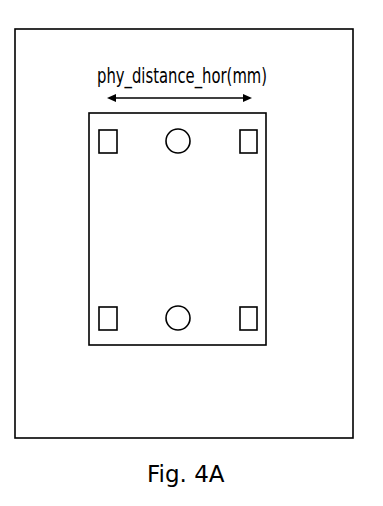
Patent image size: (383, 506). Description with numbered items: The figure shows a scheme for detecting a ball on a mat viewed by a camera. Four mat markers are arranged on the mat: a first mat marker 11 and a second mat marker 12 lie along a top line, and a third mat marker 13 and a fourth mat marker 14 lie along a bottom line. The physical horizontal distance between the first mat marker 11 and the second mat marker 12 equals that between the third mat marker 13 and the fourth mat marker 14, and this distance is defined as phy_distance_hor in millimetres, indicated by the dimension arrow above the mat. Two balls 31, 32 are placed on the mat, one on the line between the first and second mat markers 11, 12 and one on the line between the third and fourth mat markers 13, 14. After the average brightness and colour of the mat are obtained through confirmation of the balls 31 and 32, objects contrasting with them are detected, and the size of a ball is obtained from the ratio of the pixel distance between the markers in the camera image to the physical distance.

The first mat marker 11 is at (103, 142).
The second mat marker 12 is at (250, 142).
The third mat marker 13 is at (102, 318).
The fourth mat marker 14 is at (253, 307).
The ball 31 is at (175, 147).
The ball 32 is at (171, 324).